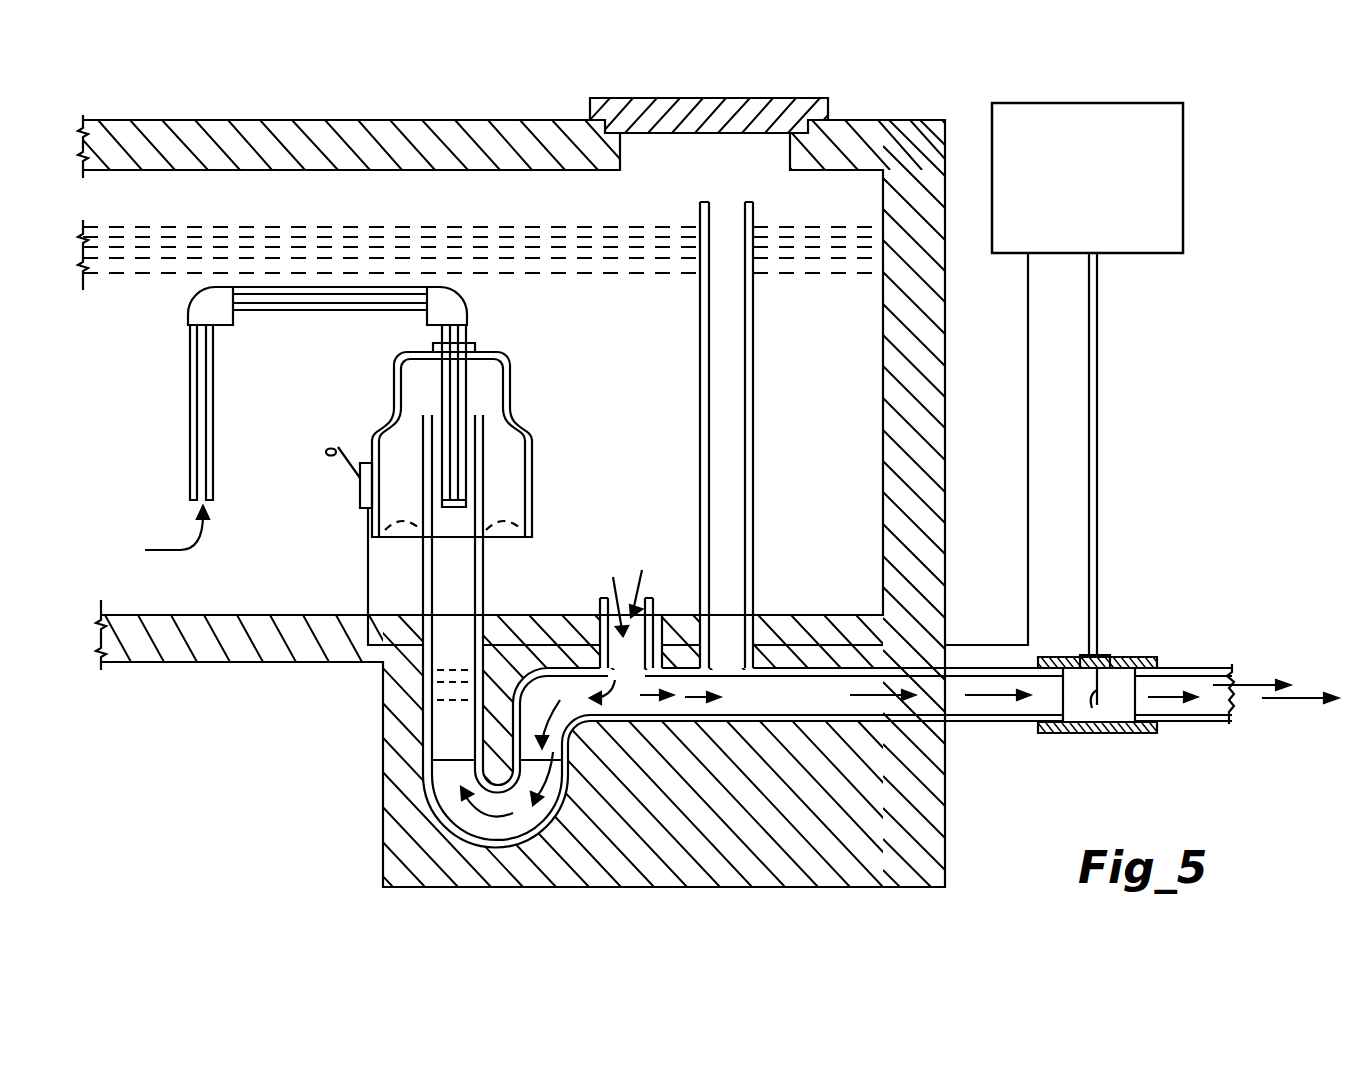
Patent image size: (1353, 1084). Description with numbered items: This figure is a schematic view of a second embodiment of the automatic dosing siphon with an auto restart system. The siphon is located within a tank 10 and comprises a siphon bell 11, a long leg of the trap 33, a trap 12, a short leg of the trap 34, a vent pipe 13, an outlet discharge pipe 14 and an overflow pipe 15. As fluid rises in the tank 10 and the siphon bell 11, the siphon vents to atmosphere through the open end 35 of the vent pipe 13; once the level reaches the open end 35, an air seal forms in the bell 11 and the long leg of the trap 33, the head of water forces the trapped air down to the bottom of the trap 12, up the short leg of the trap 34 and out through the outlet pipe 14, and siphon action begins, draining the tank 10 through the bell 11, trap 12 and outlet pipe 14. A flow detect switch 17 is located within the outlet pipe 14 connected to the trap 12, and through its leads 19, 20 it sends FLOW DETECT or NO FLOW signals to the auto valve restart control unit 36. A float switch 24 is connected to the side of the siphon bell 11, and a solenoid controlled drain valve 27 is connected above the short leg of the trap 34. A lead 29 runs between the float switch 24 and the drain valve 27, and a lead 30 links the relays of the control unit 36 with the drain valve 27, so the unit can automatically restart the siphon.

The tank 10 is at (933, 104).
The siphon bell 11 is at (520, 422).
The trap 12 is at (448, 811).
The vent pipe 13 is at (190, 398).
The outlet discharge pipe 14 is at (1003, 722).
The overflow pipe 15 is at (755, 443).
The flow detect switch 17 is at (1085, 733).
The lead 19 is at (1098, 508).
The lead 20 is at (1088, 497).
The float switch 24 is at (338, 447).
The solenoid controlled drain valve 27 is at (595, 598).
The lead 29 is at (537, 643).
The lead 30 is at (536, 492).
The long leg of the trap 33 is at (453, 734).
The short leg of the trap 34 is at (567, 727).
The open end 35 is at (160, 550).
The auto valve restart control unit 36 is at (1183, 165).